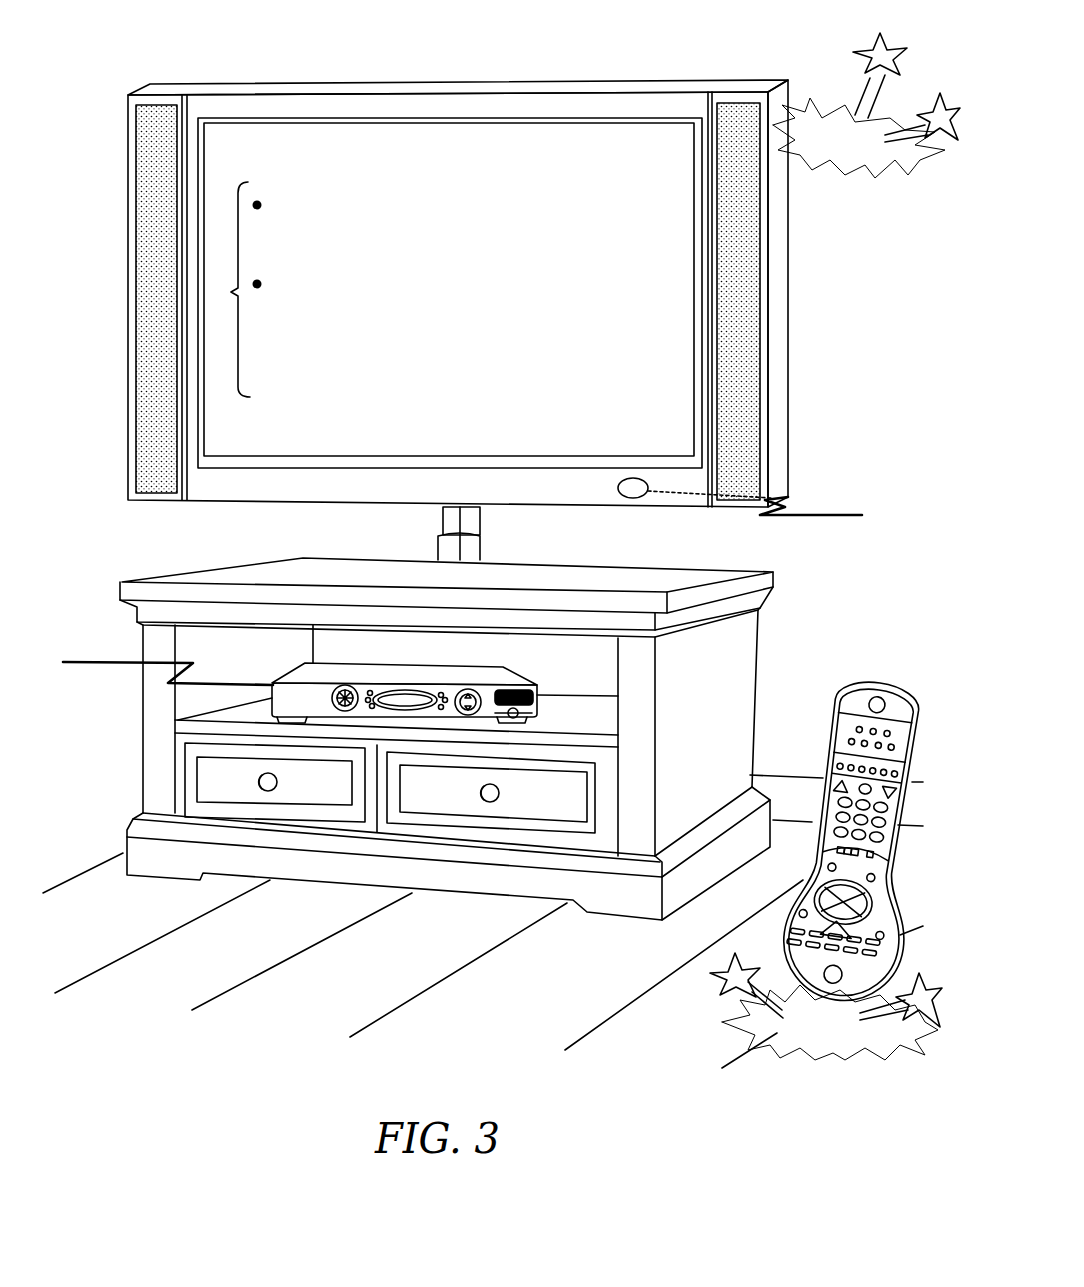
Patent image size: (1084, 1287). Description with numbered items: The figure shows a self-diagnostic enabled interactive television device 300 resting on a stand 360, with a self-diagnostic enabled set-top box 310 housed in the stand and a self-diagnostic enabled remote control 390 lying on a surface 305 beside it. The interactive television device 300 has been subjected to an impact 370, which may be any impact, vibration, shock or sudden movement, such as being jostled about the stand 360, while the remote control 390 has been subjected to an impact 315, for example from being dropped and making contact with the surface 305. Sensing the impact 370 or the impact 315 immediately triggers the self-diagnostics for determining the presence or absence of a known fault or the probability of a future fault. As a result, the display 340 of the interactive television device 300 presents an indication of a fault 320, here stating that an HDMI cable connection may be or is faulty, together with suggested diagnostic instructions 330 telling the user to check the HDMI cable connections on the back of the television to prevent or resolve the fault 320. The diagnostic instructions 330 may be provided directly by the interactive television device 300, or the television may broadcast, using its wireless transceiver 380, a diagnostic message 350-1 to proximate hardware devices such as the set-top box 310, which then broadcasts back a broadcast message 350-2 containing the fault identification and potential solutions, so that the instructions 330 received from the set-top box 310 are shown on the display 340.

The interactive television device 300 is at (422, 279).
The surface 305 is at (430, 987).
The set-top box 310 is at (303, 713).
The impact 315 is at (813, 1040).
The fault 320 is at (307, 162).
The diagnostic instructions 330 is at (231, 292).
The display 340 is at (258, 432).
The diagnostic message 350-1 is at (820, 515).
The broadcast message 350-2 is at (97, 660).
The stand 360 is at (441, 521).
The impact 370 is at (849, 86).
The wireless transceiver 380 is at (626, 497).
The remote control 390 is at (880, 683).